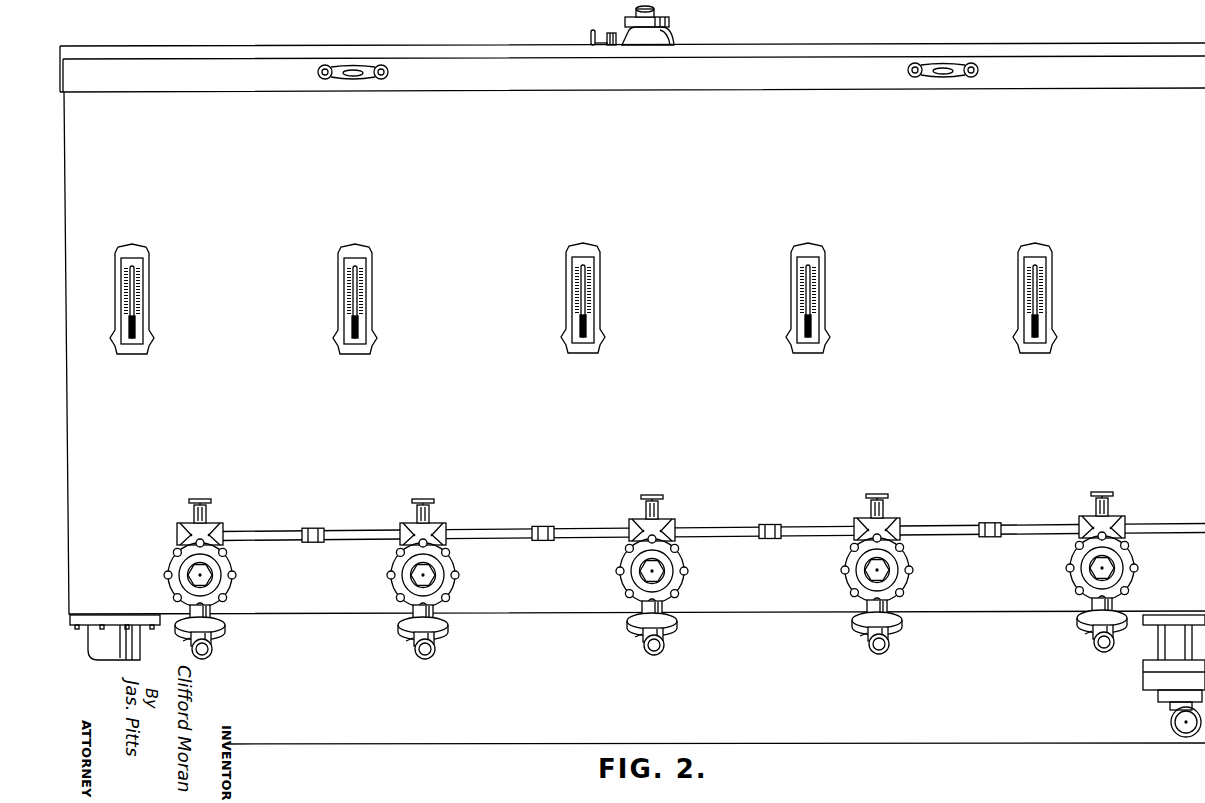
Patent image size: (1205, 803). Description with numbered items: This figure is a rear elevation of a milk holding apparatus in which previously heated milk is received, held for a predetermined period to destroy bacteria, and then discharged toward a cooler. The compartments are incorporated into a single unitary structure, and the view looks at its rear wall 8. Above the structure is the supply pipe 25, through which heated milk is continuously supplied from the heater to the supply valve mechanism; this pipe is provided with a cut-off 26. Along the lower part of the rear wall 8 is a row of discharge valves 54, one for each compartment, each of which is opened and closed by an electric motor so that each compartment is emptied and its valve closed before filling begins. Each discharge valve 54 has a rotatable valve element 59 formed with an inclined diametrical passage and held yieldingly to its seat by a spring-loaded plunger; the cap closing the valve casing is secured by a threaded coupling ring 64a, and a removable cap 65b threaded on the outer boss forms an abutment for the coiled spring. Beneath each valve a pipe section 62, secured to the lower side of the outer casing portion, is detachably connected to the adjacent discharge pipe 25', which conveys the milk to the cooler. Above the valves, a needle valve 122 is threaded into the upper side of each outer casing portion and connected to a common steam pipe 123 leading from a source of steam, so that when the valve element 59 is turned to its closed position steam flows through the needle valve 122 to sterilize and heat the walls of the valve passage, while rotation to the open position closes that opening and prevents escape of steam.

The rear wall 8 is at (540, 615).
The supply pipe 25 is at (665, 14).
The cut-off 26 is at (670, 40).
The needle valve 122 is at (210, 512).
The steam pipe 123 is at (275, 530).
The discharge valve 54 is at (651, 547).
The coupling ring 64a is at (229, 565).
The valve element 59 is at (217, 578).
The cap 65b is at (434, 578).
The pipe section 62 is at (216, 607).
The discharge pipe 25' is at (648, 643).